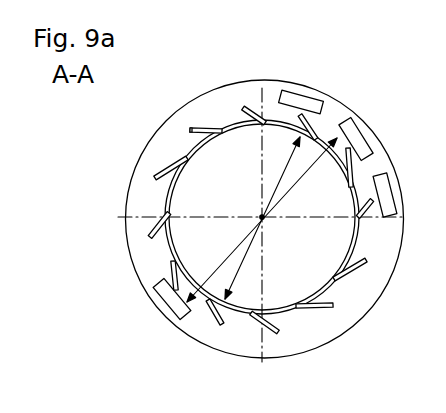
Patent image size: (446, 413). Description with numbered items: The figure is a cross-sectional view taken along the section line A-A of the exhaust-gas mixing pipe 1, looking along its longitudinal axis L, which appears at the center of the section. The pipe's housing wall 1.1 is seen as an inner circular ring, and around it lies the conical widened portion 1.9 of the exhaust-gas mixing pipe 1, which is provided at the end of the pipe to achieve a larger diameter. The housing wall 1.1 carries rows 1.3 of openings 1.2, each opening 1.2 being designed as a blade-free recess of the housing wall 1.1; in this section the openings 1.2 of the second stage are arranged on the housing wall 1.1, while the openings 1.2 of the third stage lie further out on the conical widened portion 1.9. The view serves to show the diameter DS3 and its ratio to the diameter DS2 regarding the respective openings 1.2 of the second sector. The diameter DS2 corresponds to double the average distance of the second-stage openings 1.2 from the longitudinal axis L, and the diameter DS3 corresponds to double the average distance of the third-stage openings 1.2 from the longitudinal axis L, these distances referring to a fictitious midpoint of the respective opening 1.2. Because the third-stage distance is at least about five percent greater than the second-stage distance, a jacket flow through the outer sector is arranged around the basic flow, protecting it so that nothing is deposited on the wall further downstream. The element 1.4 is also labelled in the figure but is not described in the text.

The exhaust-gas mixing pipe 1 is at (245, 198).
The housing wall 1.1 is at (166, 188).
The openings 1.2 is at (297, 101).
The rows of openings 1.3 is at (182, 130).
The sensor end 1.4 is at (188, 128).
The conical widened portion 1.9 is at (138, 257).
The diameter DS2 is at (281, 172).
The diameter DS3 is at (276, 205).
The longitudinal axis L is at (263, 219).